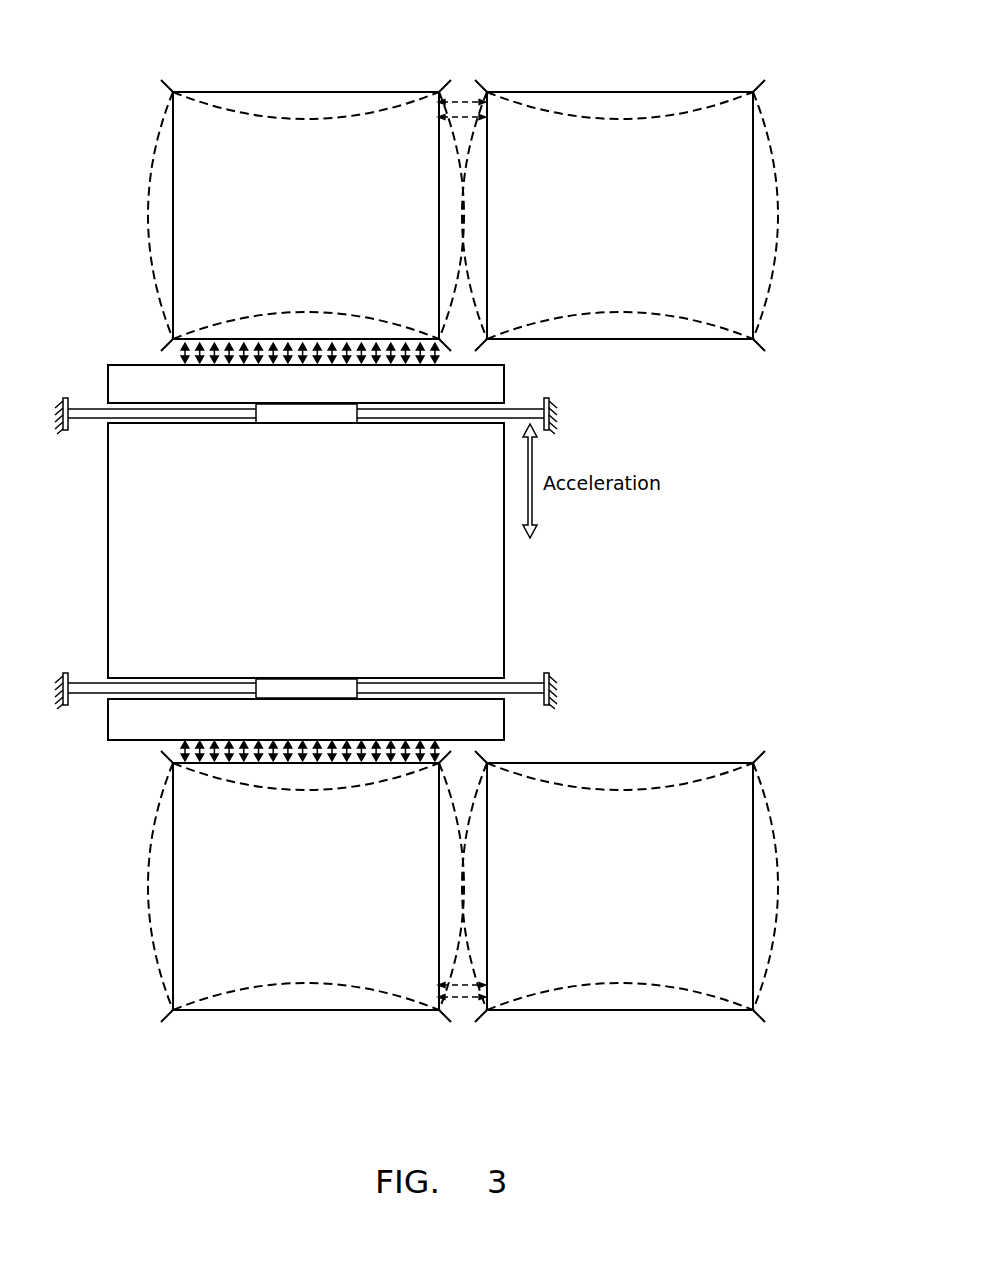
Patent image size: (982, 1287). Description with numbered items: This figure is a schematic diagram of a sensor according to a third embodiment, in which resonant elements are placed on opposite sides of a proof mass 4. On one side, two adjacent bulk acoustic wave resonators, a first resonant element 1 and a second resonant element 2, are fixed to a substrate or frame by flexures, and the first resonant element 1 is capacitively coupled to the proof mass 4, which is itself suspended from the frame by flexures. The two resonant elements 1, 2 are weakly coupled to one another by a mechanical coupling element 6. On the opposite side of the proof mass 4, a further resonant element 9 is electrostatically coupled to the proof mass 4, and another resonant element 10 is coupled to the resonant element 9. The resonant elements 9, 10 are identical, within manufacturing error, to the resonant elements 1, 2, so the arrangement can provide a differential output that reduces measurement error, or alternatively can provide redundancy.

The first resonant element 1 is at (290, 996).
The second resonant element 2 is at (633, 998).
The proof mass 4 is at (467, 587).
The mechanical coupling element 6 is at (465, 998).
The resonant element 9 is at (208, 220).
The resonant element 10 is at (715, 220).